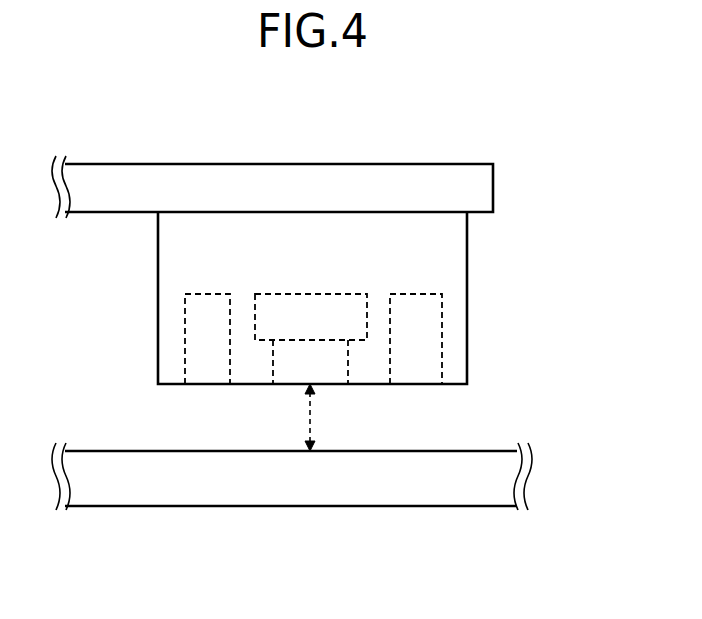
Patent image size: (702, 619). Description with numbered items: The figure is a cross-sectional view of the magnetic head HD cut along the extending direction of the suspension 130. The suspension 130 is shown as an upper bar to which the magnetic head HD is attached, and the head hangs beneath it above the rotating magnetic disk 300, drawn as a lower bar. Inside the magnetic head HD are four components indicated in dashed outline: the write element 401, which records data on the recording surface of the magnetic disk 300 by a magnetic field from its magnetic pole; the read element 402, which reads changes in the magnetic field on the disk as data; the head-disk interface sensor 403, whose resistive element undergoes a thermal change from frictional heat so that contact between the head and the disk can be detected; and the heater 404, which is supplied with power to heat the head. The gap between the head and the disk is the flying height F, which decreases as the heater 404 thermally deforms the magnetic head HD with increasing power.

The suspension 130 is at (493, 186).
The magnetic head HD is at (468, 222).
The write element 401 is at (442, 337).
The read element 402 is at (185, 337).
The head-disk interface (HDI) sensor 403 is at (270, 363).
The heater 404 is at (308, 294).
The flying height F is at (313, 413).
The magnetic disk 300 is at (290, 506).